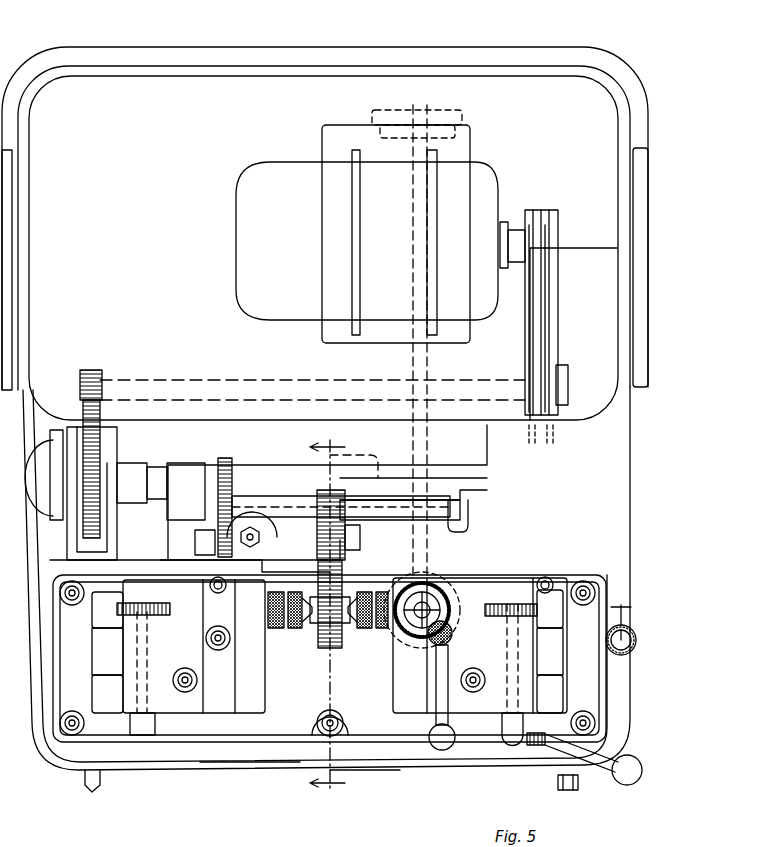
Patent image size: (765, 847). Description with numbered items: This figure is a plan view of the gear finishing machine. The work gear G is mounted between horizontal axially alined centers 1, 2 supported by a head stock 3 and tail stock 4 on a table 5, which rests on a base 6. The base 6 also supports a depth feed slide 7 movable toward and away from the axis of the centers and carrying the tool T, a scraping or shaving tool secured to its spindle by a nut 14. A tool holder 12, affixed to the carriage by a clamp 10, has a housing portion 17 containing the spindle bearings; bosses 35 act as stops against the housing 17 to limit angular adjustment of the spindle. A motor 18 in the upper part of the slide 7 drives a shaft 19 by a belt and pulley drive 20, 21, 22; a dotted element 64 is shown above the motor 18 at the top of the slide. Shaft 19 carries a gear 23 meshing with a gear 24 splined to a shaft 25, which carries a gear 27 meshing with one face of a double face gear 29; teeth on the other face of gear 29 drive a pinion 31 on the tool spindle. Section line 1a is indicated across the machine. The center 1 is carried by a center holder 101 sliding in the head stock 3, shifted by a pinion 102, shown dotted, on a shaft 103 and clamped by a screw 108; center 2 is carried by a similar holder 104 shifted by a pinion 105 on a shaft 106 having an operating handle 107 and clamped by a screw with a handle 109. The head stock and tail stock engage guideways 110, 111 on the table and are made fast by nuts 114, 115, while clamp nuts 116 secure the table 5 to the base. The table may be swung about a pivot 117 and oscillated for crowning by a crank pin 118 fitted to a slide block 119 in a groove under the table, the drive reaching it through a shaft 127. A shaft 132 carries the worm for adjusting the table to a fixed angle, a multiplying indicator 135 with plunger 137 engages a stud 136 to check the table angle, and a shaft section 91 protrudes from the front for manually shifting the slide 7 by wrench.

The depth feed slide 7 is at (597, 392).
The cap 64 is at (462, 116).
The motor 18 is at (487, 207).
The shaft 127 is at (428, 446).
The belt and pulley drive 20 is at (557, 216).
The belt and pulley drive 21 is at (552, 308).
The belt and pulley drive 22 is at (560, 354).
The shaft 19 is at (286, 378).
The gear 23 is at (94, 370).
The gear 24 is at (100, 460).
The shaft 25 is at (136, 487).
The bosses 35 is at (200, 490).
The gear 27 is at (226, 458).
The double face gear 29 is at (251, 495).
The pinion 31 is at (200, 548).
The housing portion 17 is at (165, 552).
The section line 1a is at (321, 617).
The tool T is at (318, 555).
The nut 14 is at (352, 538).
The tool holder 12 is at (405, 517).
The clamp 10 is at (455, 532).
The pivot 117 is at (318, 595).
The center 1 is at (298, 630).
The center 2 is at (360, 632).
The work gear G is at (330, 652).
The crank pin 118 is at (413, 640).
The handle 109 is at (438, 750).
The slide block 119 is at (244, 833).
The head stock 3 is at (262, 700).
The tail stock 4 is at (400, 706).
The center holder 101 is at (100, 614).
The guideway 110 is at (95, 661).
The shaft 103 is at (137, 691).
The pinion 102 is at (148, 603).
The screw 108 is at (206, 639).
The nut 114 is at (173, 680).
The pinion 105 is at (521, 604).
The center holder 104 is at (552, 596).
The shaft 106 is at (507, 641).
The guideway 111 is at (552, 675).
The nut 115 is at (474, 691).
The stud 136 is at (622, 605).
The plunger 137 is at (636, 633).
The multiplying indicator 135 is at (632, 649).
The clamp nuts 116 is at (596, 723).
The operating handle 107 is at (641, 773).
The shaft 132 is at (556, 788).
The table 5 is at (253, 742).
The base 6 is at (355, 766).
The shaft section 91 is at (88, 792).